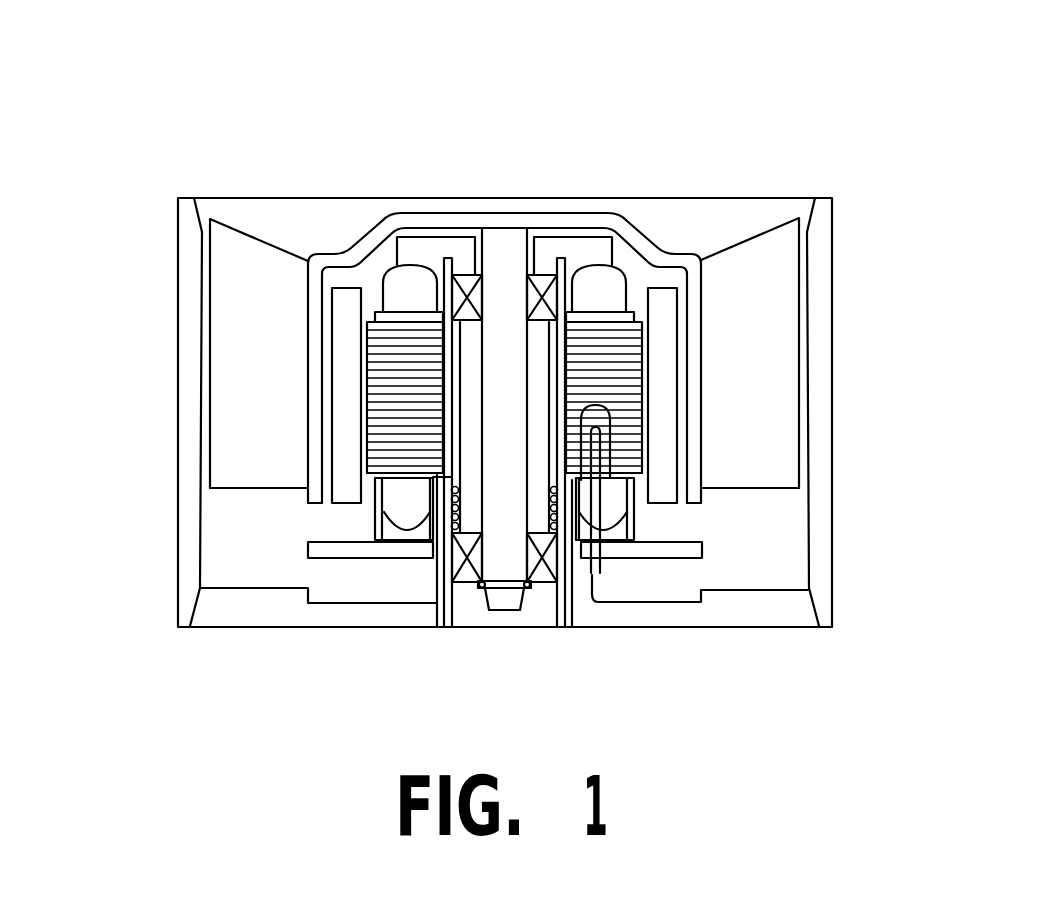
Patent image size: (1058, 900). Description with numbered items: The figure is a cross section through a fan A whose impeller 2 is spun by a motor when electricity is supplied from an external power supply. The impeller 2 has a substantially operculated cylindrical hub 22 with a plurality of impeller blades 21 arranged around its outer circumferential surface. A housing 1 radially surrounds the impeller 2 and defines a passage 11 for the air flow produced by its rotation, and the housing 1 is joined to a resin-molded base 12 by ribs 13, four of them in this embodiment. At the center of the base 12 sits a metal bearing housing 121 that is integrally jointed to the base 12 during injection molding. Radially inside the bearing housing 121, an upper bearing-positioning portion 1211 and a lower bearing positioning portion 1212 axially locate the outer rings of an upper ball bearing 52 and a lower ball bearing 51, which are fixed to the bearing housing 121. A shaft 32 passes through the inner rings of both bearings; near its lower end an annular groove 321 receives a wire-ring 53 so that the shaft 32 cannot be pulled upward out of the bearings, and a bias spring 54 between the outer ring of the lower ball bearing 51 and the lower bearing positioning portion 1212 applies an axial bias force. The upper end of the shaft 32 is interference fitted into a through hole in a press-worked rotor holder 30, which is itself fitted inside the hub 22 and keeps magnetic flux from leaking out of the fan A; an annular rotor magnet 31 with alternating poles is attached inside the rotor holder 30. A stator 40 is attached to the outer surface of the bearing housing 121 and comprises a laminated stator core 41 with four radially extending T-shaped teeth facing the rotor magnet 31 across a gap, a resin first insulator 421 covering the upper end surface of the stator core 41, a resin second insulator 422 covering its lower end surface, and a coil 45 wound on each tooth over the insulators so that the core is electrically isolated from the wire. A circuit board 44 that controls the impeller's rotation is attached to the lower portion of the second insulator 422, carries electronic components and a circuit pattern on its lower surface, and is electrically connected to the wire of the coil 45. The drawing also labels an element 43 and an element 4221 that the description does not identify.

The fan A is at (408, 76).
The housing 1 is at (820, 388).
The passage 11 is at (202, 205).
The base 12 is at (662, 613).
The ribs 13 is at (240, 608).
The bearing housing 121 is at (562, 572).
The upper bearing-positioning portion 1211 is at (453, 323).
The lower bearing positioning portion 1212 is at (450, 478).
The impeller 2 is at (655, 222).
The impeller blades 21 is at (770, 440).
The hub 22 is at (695, 305).
The rotor holder 30 is at (403, 285).
The rotor magnet 31 is at (343, 317).
The shaft 32 is at (502, 252).
The annular groove 321 is at (508, 585).
The stator 40 is at (583, 250).
The stator core 41 is at (622, 370).
The first insulator 421 is at (668, 252).
The second insulator 422 is at (622, 475).
The terminal receiving portion 4221 is at (577, 530).
The terminal pin 43 is at (593, 503).
The circuit board 44 is at (322, 548).
The coil 45 is at (417, 233).
The lower ball bearing 51 is at (453, 553).
The upper ball bearing 52 is at (473, 275).
The wire-ring 53 is at (481, 582).
The bias spring 54 is at (450, 507).